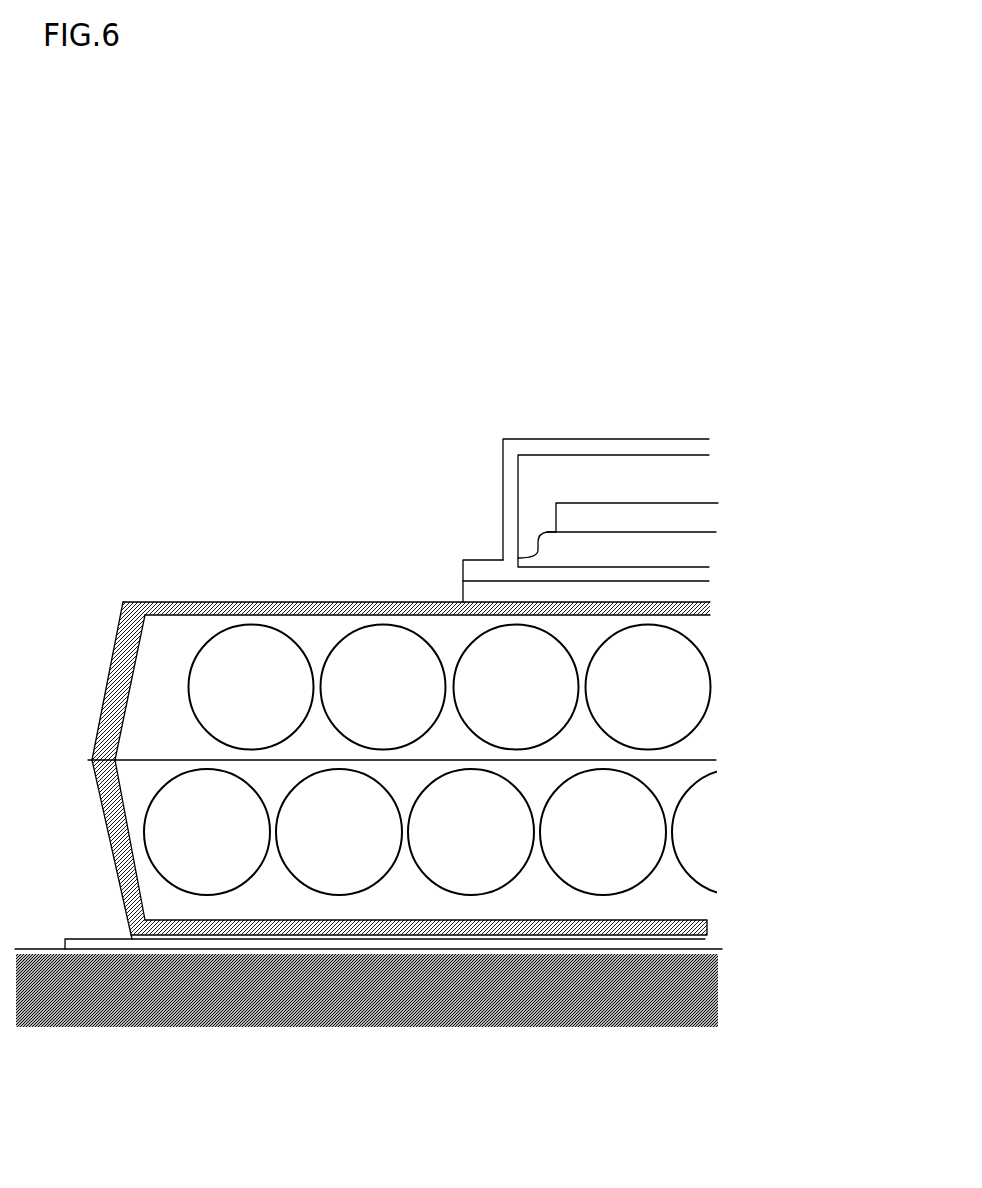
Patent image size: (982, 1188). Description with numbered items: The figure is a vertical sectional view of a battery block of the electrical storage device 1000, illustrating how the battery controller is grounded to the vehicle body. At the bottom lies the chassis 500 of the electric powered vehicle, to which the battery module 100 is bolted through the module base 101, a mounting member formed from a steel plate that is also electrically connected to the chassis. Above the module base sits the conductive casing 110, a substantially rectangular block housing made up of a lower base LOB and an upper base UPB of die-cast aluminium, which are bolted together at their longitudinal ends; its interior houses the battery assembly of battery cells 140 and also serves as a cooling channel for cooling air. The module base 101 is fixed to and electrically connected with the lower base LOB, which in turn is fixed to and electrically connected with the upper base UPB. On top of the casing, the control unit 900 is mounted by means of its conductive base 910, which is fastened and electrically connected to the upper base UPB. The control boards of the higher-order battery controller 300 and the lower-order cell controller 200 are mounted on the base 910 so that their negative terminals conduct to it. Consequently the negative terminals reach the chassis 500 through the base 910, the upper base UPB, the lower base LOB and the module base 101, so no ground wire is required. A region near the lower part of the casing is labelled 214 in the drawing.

The electrical storage device 1000 is at (236, 346).
The control unit 900 is at (697, 439).
The base 910 is at (462, 592).
The battery controller 300 is at (680, 503).
The cell controller 200 is at (618, 530).
The battery module 100 is at (252, 604).
The casing 110 is at (198, 552).
The upper base UPB is at (147, 601).
The lower base LOB is at (97, 790).
The battery cells 140 is at (332, 640).
The bottom plate portion 214 is at (160, 902).
The module base 101 is at (106, 938).
The chassis 500 is at (707, 972).